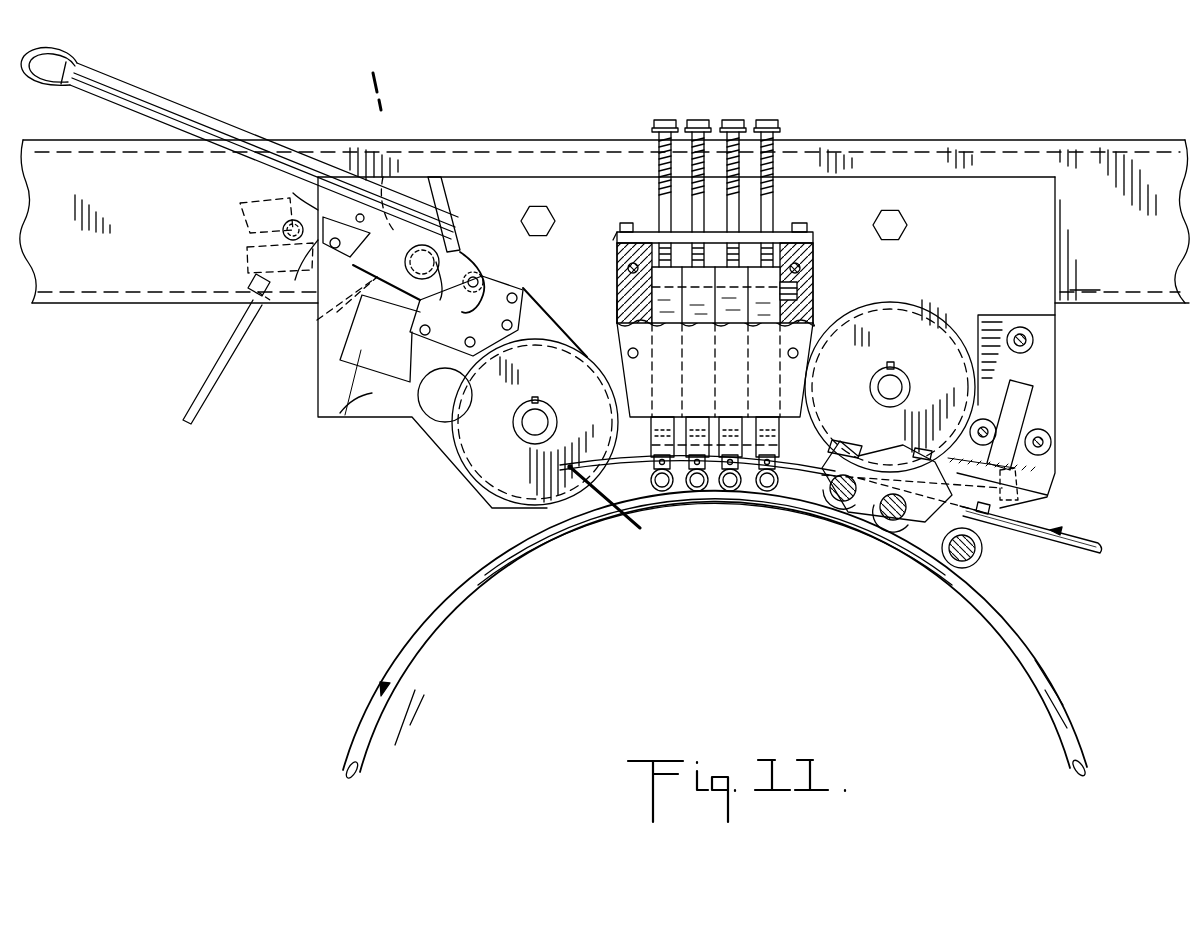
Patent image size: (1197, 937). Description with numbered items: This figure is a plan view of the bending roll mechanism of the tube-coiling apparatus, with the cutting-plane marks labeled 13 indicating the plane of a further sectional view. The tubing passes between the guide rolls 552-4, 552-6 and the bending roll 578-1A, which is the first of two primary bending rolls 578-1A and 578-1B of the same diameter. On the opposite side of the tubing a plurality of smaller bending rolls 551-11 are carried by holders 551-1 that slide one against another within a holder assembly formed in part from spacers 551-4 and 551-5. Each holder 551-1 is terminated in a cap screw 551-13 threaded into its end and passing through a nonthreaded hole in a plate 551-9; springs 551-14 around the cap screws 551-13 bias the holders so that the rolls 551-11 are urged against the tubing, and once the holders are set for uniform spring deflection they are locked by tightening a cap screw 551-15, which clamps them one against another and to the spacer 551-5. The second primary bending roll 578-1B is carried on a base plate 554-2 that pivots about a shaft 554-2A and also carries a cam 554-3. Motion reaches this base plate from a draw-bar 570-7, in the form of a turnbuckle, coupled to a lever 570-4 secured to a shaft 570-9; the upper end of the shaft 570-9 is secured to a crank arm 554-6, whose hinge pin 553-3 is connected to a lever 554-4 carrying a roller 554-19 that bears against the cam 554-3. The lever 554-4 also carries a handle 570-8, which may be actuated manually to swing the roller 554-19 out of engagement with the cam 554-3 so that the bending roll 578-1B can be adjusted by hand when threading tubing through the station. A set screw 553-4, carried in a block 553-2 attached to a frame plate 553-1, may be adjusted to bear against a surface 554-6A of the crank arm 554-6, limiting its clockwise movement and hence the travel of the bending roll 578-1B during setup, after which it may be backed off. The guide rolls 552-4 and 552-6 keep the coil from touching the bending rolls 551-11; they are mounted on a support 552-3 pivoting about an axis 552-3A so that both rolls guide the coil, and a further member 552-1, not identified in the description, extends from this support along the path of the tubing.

The section line 13- 13 is at (368, 89).
The handle 570-8 is at (118, 95).
The shaft 570-9 is at (383, 177).
The lever 570-4 is at (245, 255).
The draw-bar 570-7 is at (225, 348).
The set screw 553-4 is at (293, 193).
The hinge pin 553-3 is at (445, 262).
The block 553-2 is at (290, 286).
The frame plate 553-1 is at (327, 368).
The crank arm 554-6 is at (437, 177).
The surface 554-6A is at (337, 312).
The lever 554-4 is at (462, 245).
The roller 554-19 is at (487, 277).
The cam 554-3 is at (527, 297).
The base plate 554-2 is at (340, 413).
The shaft 554-2A is at (433, 397).
The spacer 551-5 is at (617, 232).
The cap screws 551-13 is at (700, 118).
The springs 551-14 is at (777, 157).
The plate 551-9 is at (773, 237).
The holders 551-1 is at (773, 277).
The spacer 551-4 is at (813, 267).
The cap screw 551-15 is at (813, 290).
The bending rolls 551-11 is at (675, 495).
The bending roll 578-1A is at (898, 325).
The bending roll 578-1B is at (473, 453).
The guide bar 552-1 is at (1033, 503).
The support 552-3 is at (993, 537).
The axis 552-3A is at (900, 513).
The roll 552-4 is at (847, 507).
The roll 552-6 is at (973, 570).